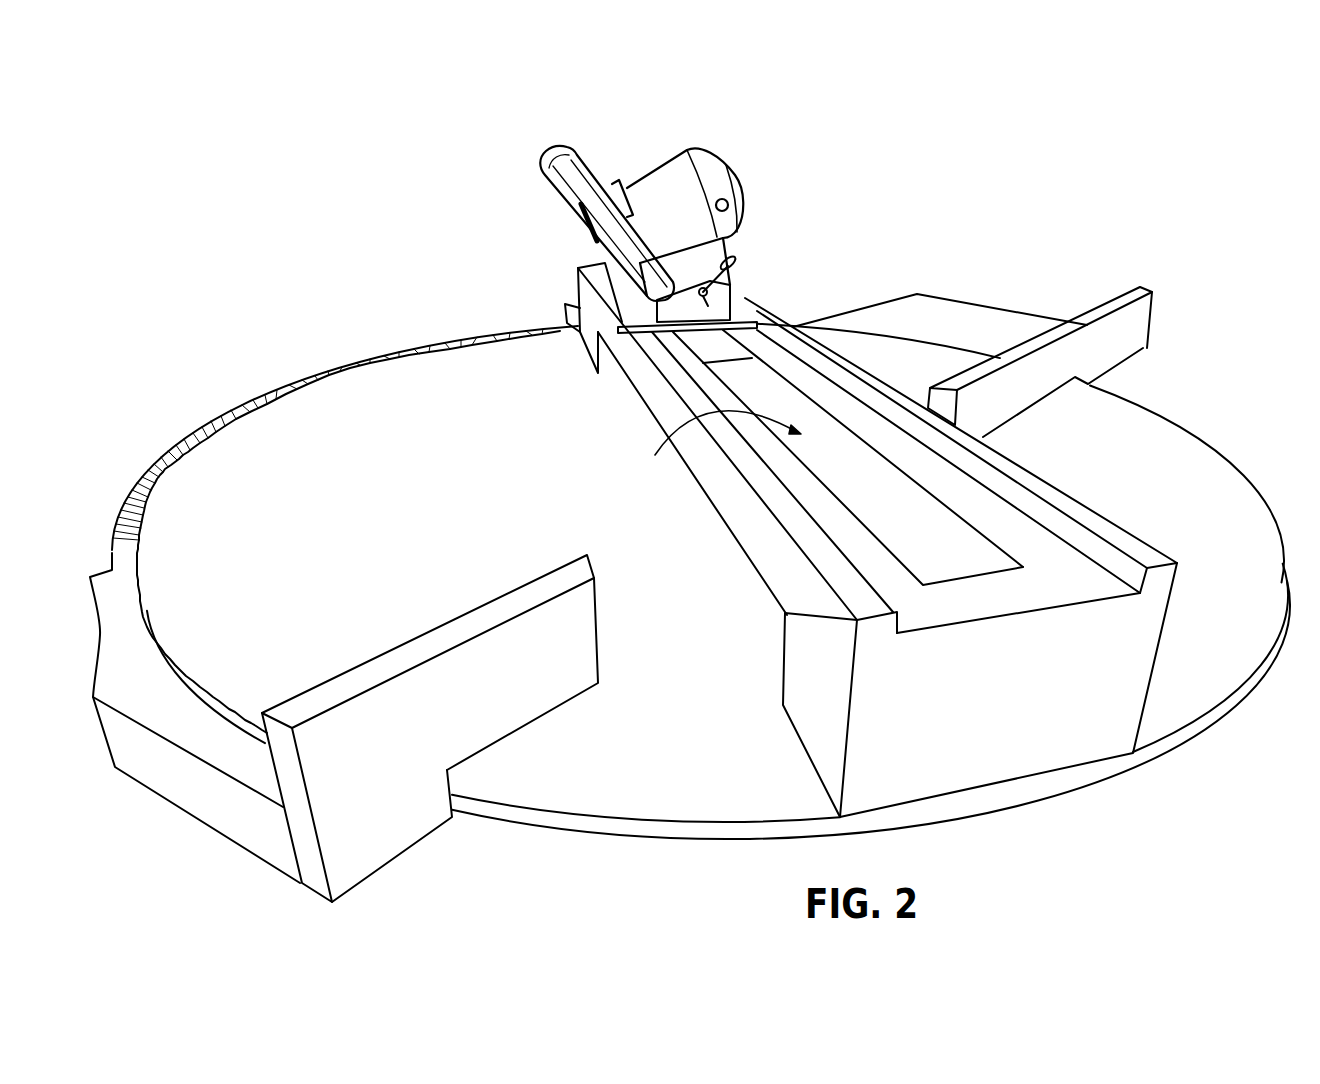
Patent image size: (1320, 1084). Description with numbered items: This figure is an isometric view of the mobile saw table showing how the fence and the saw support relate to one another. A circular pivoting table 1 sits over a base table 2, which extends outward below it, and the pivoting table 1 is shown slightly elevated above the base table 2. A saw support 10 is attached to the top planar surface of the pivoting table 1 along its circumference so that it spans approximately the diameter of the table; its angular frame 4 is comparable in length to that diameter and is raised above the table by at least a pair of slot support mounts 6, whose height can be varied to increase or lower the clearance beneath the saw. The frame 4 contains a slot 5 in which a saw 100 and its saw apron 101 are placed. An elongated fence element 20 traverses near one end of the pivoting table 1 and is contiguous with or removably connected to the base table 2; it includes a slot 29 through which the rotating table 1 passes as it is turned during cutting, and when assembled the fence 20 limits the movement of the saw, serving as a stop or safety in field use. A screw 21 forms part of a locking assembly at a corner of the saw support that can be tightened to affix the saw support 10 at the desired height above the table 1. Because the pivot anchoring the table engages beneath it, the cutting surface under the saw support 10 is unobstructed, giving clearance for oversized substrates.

The pivoting table 1 is at (546, 487).
The base table 2 is at (188, 713).
The frame 4 is at (1075, 537).
The slot 5 is at (717, 444).
The slot support mounts 6 is at (1050, 693).
The saw support 10 is at (871, 448).
The fence element 20 is at (735, 594).
The screw 21 is at (170, 455).
The slot 29 is at (465, 767).
The saw 100 is at (710, 161).
The saw apron 101 is at (693, 278).